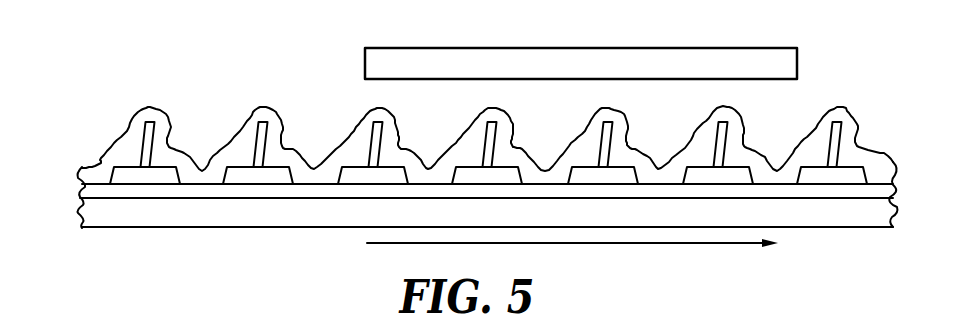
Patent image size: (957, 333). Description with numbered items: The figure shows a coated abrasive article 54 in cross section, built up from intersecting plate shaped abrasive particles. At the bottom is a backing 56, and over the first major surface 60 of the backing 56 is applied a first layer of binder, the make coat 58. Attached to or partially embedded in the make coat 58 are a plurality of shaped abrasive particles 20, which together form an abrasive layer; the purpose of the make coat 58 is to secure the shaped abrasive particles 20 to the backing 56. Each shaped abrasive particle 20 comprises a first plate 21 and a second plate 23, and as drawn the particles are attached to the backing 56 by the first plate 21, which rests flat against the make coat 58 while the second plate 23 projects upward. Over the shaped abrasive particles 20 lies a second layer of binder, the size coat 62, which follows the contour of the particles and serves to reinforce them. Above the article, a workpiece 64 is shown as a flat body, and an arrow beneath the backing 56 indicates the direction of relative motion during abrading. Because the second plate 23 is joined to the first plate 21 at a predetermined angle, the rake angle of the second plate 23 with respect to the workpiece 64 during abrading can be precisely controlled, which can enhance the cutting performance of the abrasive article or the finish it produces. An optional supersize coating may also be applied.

The shaped abrasive particles 20 is at (266, 112).
The first plate 21 is at (167, 176).
The second plate 23 is at (147, 137).
The coated abrasive article 54 is at (93, 245).
The backing 56 is at (90, 218).
The make coat 58 is at (88, 189).
The first major surface 60 is at (105, 196).
The size coat 62 is at (155, 116).
The workpiece 64 is at (517, 58).